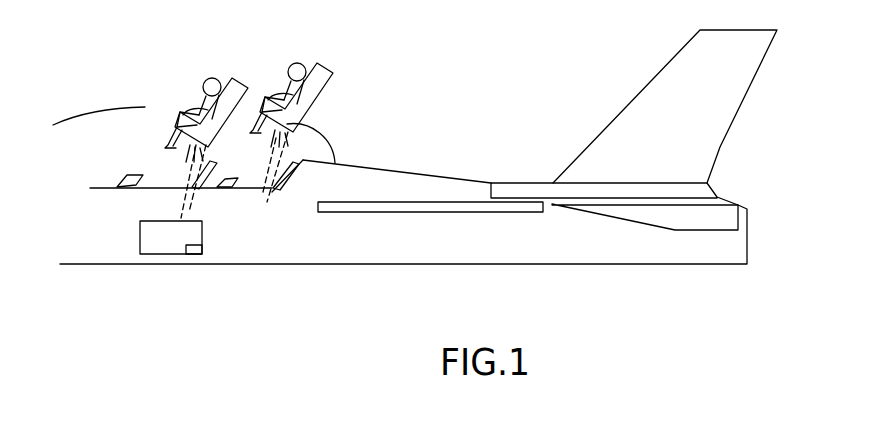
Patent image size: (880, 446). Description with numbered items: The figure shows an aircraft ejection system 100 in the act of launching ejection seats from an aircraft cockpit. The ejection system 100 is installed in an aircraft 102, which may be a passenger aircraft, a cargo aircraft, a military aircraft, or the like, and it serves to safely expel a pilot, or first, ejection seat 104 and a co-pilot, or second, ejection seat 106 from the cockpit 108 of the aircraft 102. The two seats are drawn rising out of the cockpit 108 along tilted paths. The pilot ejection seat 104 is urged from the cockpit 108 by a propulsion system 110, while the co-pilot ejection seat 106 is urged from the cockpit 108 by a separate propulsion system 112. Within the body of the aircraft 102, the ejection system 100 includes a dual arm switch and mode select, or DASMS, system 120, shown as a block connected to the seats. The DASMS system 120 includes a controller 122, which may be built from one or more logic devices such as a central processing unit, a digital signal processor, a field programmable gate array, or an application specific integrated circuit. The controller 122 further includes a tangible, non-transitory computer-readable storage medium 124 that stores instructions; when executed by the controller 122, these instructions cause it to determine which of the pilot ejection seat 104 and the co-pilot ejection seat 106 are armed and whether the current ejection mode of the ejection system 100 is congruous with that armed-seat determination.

The aircraft ejection system 100 is at (402, 35).
The aircraft 102 is at (445, 246).
The pilot ejection seat 104 is at (238, 76).
The co-pilot ejection seat 106 is at (334, 74).
The cockpit 108 is at (87, 142).
The propulsion system 110 is at (190, 172).
The propulsion system 112 is at (275, 162).
The dual arm switch and mode select (DASMS) system 120 is at (130, 225).
The controller 122 is at (158, 247).
The computer-readable storage medium 124 is at (192, 256).